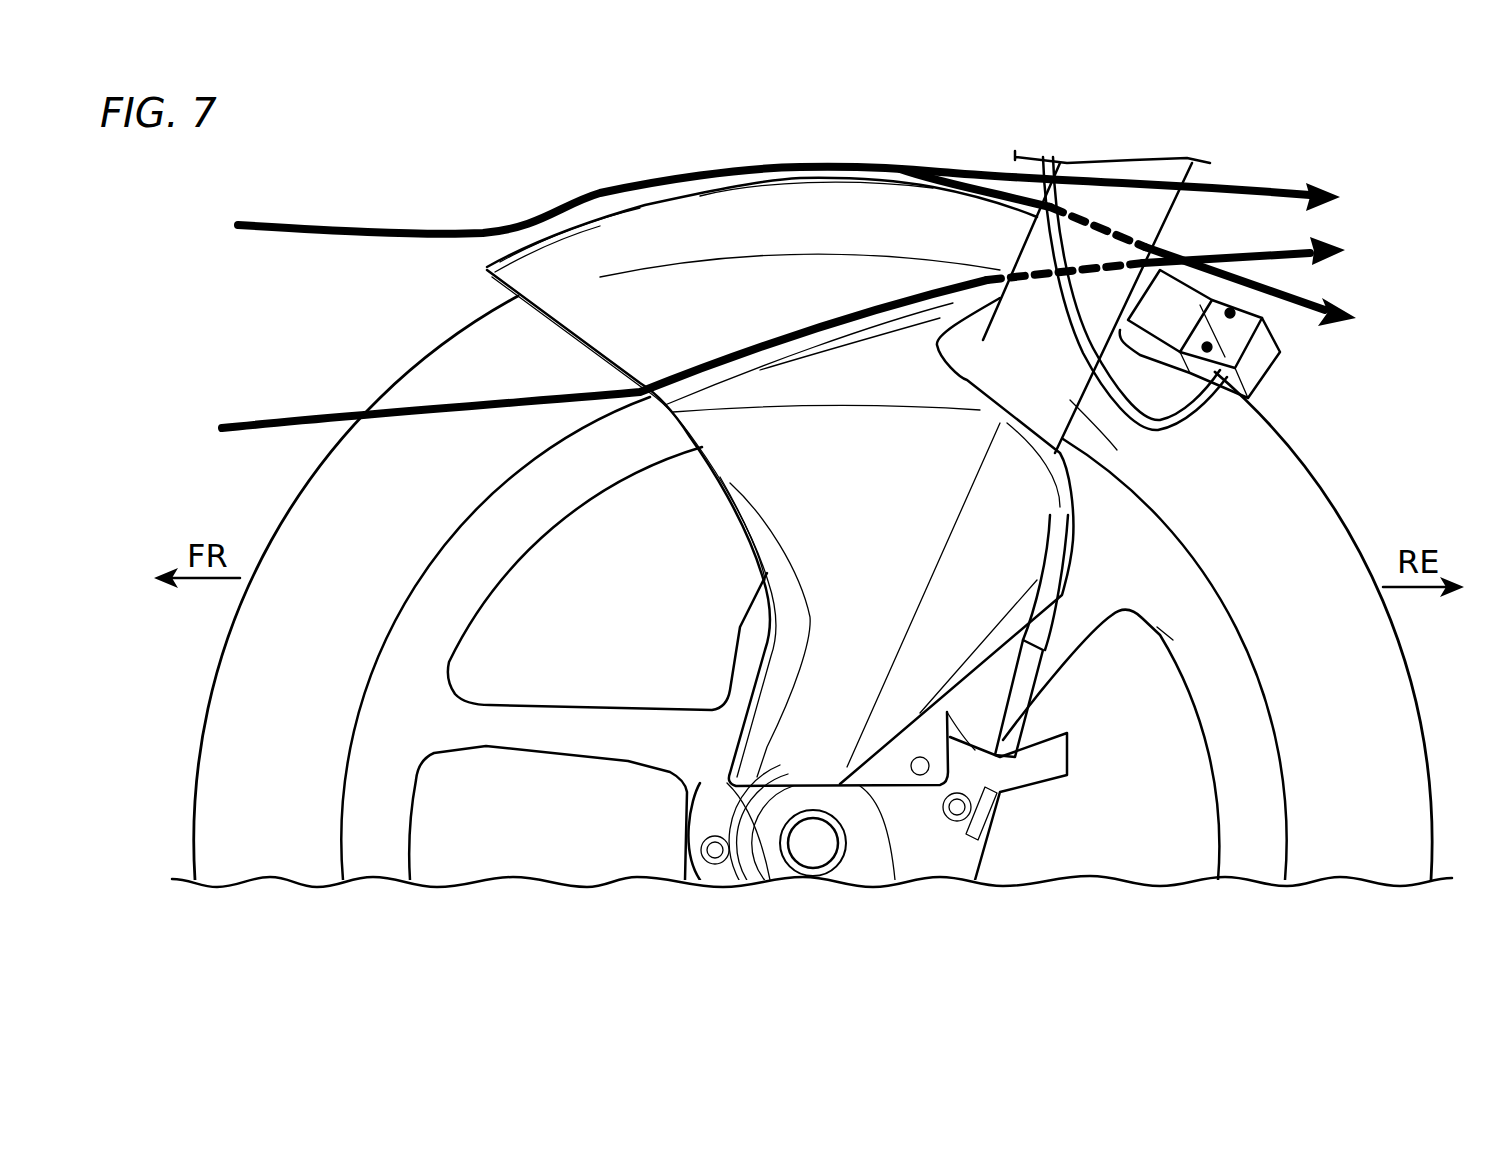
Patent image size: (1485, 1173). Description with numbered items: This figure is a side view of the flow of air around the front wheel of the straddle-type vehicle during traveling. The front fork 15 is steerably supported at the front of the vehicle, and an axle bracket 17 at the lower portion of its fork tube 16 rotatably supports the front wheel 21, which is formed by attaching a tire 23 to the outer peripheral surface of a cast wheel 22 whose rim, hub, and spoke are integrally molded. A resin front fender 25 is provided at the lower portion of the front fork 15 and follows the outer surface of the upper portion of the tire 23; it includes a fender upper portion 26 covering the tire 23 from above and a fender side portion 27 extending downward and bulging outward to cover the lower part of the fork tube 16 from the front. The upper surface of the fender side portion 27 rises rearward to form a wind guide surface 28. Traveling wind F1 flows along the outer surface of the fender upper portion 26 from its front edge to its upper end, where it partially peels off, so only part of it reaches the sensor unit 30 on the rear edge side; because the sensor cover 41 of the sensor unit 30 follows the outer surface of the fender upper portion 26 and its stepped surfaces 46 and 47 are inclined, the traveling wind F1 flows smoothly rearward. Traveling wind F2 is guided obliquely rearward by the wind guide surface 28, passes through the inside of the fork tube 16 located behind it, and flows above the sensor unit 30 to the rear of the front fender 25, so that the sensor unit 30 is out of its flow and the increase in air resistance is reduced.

The front fork 15 is at (1220, 160).
The fork tube 16 is at (1070, 400).
The axle bracket 17 is at (927, 867).
The front wheel 21 is at (425, 340).
The wheel 22 is at (523, 545).
The tire 23 is at (303, 504).
The front fender 25 is at (561, 185).
The fender upper portion 26 is at (795, 193).
The fender side portion 27 is at (767, 490).
The wind guide surface 28 is at (820, 360).
The sensor unit 30 is at (1228, 307).
The sensor cover 41 is at (1277, 360).
The stepped surface 46 is at (1210, 303).
The stepped surface 47 is at (1250, 303).
The traveling wind F1 is at (650, 172).
The traveling wind F2 is at (745, 347).